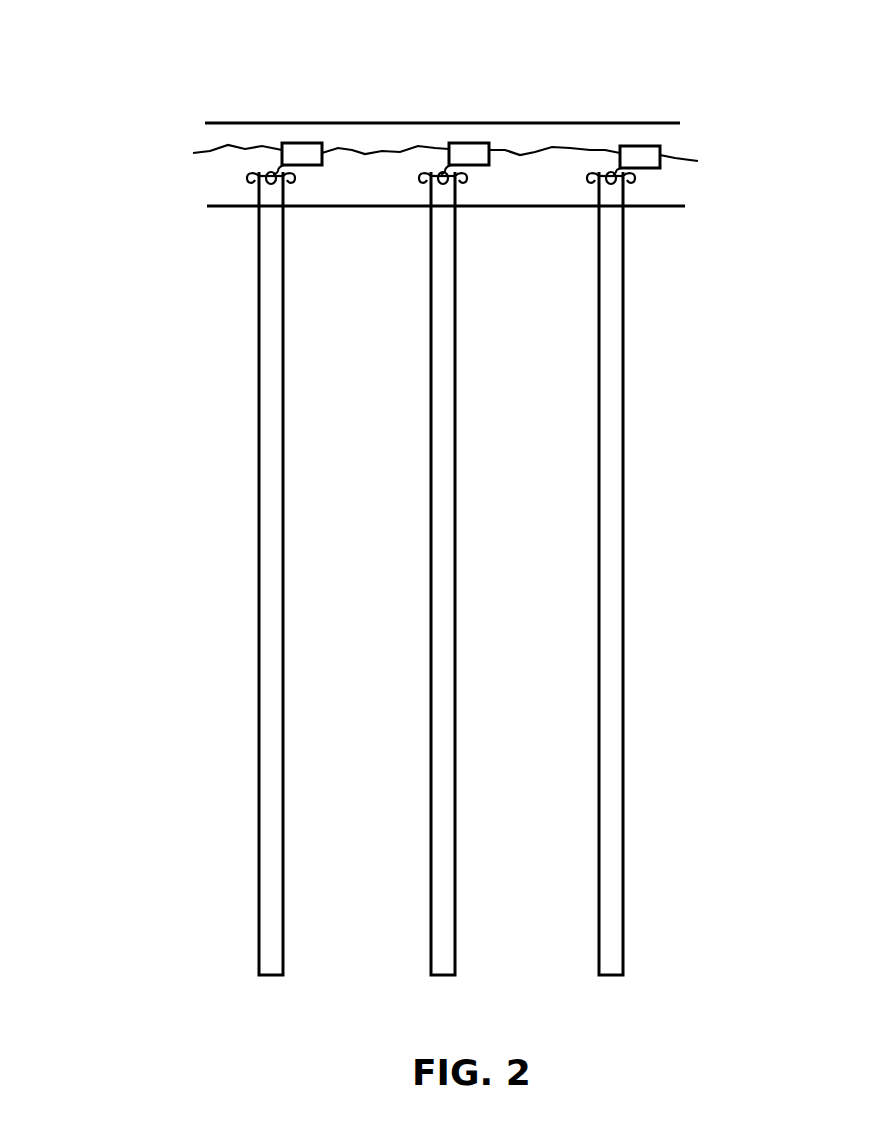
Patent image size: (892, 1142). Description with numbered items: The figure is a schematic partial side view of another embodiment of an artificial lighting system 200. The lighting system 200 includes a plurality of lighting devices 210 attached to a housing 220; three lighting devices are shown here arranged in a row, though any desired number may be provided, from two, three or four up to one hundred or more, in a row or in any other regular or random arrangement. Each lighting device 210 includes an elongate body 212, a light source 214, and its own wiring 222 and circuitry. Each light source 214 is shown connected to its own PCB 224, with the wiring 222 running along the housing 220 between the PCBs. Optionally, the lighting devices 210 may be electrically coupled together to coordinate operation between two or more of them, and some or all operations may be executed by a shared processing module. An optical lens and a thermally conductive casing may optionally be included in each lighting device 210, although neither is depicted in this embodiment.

The lighting system 200 is at (142, 80).
The lighting device 210 is at (237, 513).
The elongate body 212 is at (617, 550).
The light source 214 is at (444, 186).
The housing 220 is at (249, 124).
The wiring 222 is at (613, 171).
The PCB 224 is at (642, 149).